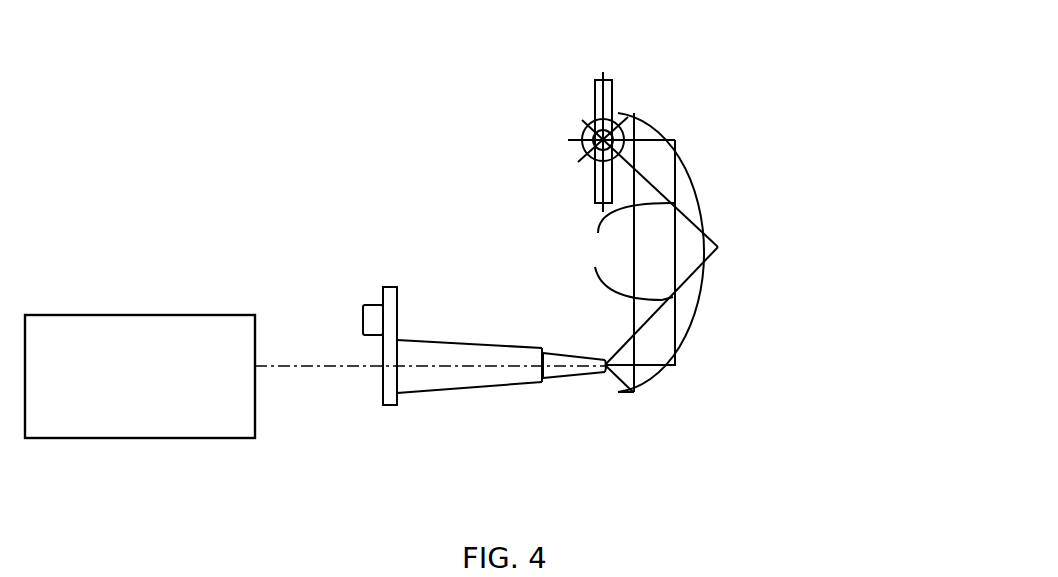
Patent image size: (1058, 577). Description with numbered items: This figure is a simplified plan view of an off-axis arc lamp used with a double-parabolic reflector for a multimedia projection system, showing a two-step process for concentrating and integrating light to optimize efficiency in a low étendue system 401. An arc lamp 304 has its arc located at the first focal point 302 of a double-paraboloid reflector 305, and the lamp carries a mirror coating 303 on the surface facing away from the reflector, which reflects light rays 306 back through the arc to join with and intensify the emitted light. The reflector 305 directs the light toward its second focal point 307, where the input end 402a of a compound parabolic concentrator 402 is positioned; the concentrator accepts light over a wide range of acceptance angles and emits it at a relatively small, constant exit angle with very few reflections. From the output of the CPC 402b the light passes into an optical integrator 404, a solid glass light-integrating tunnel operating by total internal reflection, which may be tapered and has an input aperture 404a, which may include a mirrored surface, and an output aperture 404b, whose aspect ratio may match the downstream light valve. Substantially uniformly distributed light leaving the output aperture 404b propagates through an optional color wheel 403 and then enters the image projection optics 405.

The first focal point 302 is at (588, 157).
The mirror coating 303 is at (568, 140).
The arc lamp 304 is at (634, 80).
The double-paraboloid reflector 305 is at (692, 347).
The light rays 306 is at (675, 277).
The second focal point 307 is at (613, 348).
The low étendue system 401 is at (782, 186).
The compound parabolic concentrator 402 is at (583, 378).
The input end 402a is at (608, 368).
The output of the CPC 402b is at (542, 385).
The color wheel 403 is at (383, 287).
The optical integrator 404 is at (443, 347).
The input aperture 404a is at (542, 350).
The output aperture 404b is at (397, 340).
The image projection optics 405 is at (107, 315).